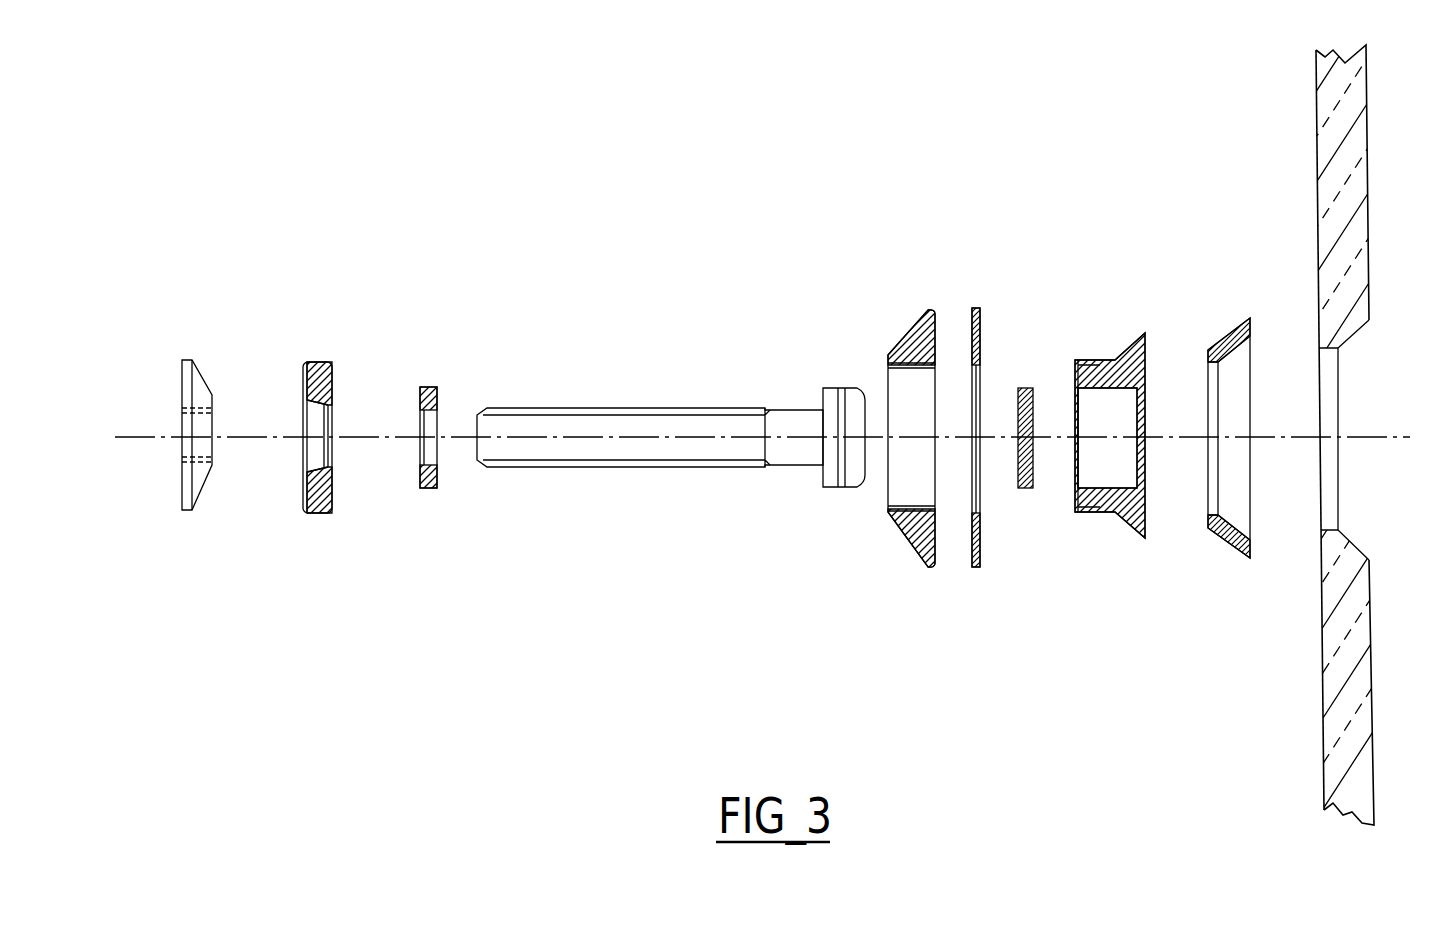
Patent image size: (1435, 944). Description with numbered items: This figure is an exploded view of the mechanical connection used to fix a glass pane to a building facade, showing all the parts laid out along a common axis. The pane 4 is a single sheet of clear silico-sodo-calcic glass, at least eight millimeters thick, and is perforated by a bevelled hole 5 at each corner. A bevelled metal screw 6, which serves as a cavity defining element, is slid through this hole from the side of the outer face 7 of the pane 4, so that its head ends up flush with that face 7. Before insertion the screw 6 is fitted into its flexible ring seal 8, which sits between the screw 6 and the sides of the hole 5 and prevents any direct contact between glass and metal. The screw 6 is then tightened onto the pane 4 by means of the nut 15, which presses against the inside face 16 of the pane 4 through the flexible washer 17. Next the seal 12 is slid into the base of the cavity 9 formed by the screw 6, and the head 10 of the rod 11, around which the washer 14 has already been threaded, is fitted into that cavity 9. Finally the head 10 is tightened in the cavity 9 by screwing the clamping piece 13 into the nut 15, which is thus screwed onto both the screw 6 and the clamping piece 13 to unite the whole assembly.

The pane 4 is at (1339, 430).
The bevelled hole 5 is at (1366, 343).
The screw 6 is at (1132, 405).
The face 7 is at (1368, 293).
The ring seal 8 is at (1235, 333).
The cavity 9 is at (1136, 462).
The head 10 is at (830, 397).
The rod 11 is at (683, 422).
The seal 12 is at (1033, 400).
The clamping piece 13 is at (320, 380).
The washer 14 is at (437, 393).
The nut 15 is at (935, 318).
The inside face 16 is at (1317, 250).
The washer 17 is at (980, 322).